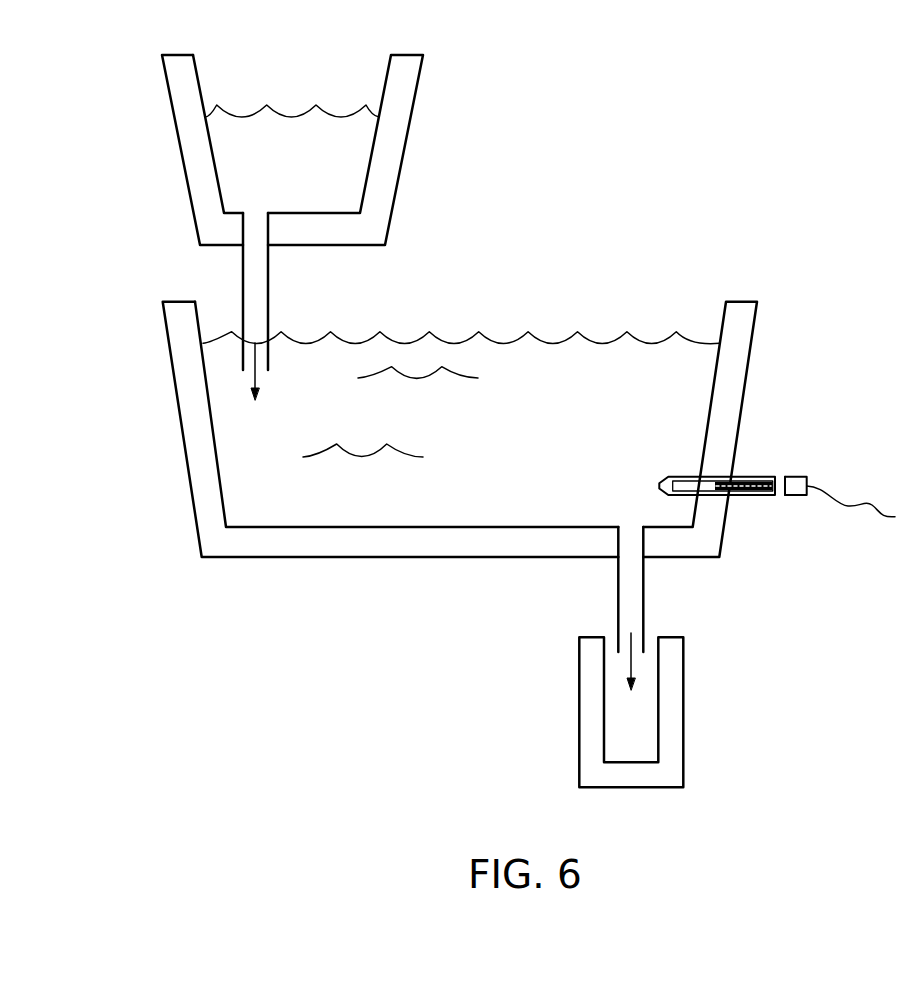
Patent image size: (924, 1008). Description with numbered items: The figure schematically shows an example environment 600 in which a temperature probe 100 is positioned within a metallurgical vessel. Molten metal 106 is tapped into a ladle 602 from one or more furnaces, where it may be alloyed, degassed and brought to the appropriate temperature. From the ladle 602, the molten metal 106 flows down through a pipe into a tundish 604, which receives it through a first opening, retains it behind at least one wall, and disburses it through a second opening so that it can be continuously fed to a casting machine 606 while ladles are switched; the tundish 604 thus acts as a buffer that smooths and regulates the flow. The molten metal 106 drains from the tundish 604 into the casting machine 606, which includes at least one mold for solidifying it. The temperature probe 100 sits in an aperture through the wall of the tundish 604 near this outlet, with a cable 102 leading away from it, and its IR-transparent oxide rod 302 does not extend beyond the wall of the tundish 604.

The environment 600 is at (362, 638).
The ladle 602 is at (413, 102).
The tundish 604 is at (749, 350).
The casting machine 606 is at (683, 715).
The molten metal 106 is at (313, 176).
The temperature probe 100 is at (778, 477).
The cable 102 is at (803, 484).
The IR-transparent oxide rod 302 is at (752, 491).